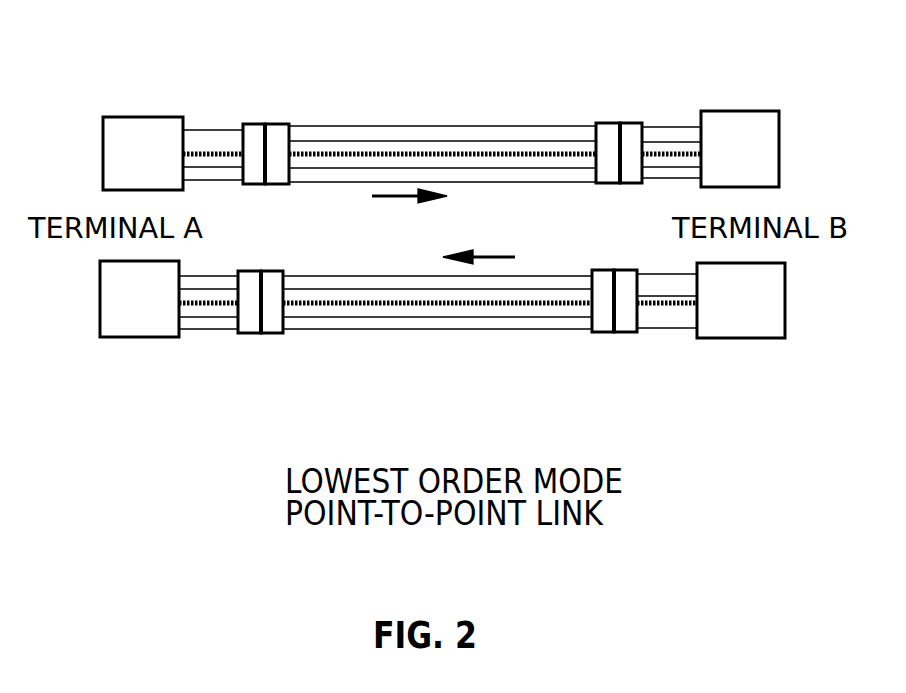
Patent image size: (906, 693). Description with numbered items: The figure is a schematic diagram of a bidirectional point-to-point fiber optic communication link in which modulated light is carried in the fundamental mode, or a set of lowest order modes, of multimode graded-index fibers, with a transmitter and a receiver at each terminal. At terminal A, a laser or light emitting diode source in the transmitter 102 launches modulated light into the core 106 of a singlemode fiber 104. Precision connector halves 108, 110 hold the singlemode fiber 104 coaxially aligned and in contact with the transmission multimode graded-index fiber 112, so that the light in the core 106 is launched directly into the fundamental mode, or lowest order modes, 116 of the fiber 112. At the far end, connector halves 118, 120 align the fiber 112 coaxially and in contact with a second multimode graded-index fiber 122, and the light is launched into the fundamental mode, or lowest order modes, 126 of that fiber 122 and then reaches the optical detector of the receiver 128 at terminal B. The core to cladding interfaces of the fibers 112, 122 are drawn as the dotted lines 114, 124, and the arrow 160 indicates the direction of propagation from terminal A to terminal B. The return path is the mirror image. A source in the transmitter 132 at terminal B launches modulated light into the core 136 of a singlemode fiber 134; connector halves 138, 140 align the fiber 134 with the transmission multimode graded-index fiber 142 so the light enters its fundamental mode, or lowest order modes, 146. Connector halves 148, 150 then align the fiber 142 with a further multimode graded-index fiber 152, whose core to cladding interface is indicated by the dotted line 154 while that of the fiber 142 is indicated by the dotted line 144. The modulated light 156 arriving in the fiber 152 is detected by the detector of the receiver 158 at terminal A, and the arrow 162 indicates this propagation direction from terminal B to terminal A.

The transmitter 102 is at (123, 118).
The singlemode fiber 104 is at (190, 93).
The core 106 is at (213, 88).
The connector half 108 is at (273, 102).
The connector half 110 is at (305, 125).
The multimode graded-index fiber 112 is at (442, 80).
The dotted line 114 is at (442, 97).
The fundamental mode or lowest order modes 116 is at (442, 119).
The connector half 118 is at (569, 127).
The connector half 120 is at (584, 103).
The multimode graded-index fiber 122 is at (645, 88).
The dotted line 124 is at (662, 79).
The fundamental mode or lowest order modes 126 is at (684, 99).
The receiver 128 is at (752, 113).
The transmitter 132 is at (756, 335).
The singlemode fiber 134 is at (694, 371).
The core 136 is at (667, 351).
The connector half 138 is at (635, 357).
The connector half 140 is at (582, 349).
The multimode graded-index fiber 142 is at (437, 367).
The dotted line 144 is at (437, 362).
The fundamental mode or lowest order modes 146 is at (437, 344).
The connector half 148 is at (298, 333).
The connector half 150 is at (278, 349).
The multimode graded-index fiber 152 is at (182, 383).
The dotted line 154 is at (205, 357).
The modulated light 156 is at (218, 370).
The receiver 158 is at (125, 335).
The arrow 160 is at (396, 223).
The arrow 162 is at (494, 233).